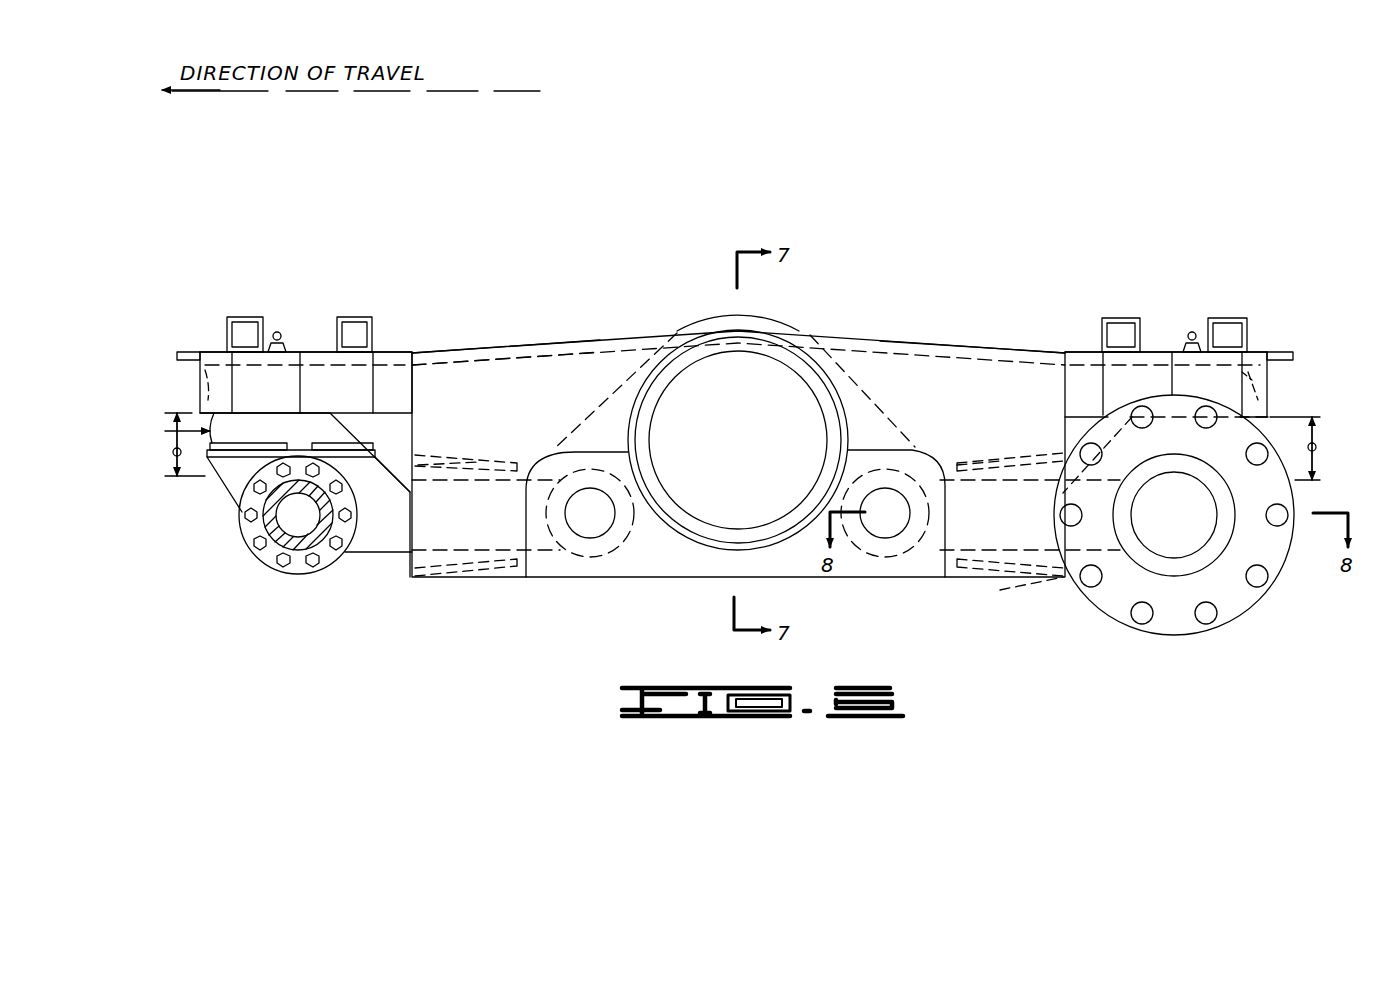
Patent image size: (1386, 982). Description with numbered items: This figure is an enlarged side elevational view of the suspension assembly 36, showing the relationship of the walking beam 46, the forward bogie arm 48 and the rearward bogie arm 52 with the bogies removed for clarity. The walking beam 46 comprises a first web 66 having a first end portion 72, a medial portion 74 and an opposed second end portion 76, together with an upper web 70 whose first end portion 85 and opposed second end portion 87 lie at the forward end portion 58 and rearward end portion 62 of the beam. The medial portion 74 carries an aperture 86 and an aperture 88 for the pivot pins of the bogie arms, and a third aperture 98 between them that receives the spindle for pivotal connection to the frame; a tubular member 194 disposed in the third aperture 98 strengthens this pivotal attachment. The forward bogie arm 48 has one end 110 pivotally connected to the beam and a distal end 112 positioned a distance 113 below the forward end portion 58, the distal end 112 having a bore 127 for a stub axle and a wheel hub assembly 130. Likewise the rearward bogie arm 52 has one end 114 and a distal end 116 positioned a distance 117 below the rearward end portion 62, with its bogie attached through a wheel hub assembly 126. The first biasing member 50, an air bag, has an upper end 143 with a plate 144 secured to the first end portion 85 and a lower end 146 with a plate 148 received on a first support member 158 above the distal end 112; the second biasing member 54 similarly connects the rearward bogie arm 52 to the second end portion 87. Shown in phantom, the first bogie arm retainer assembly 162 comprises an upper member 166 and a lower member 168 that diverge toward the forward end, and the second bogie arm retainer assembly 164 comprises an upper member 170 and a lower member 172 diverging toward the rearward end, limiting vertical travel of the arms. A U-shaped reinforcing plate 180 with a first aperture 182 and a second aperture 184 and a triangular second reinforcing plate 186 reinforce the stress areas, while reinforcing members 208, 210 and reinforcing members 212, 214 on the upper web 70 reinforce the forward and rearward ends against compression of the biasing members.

The suspension assembly 36 is at (912, 298).
The walking beam 46 is at (519, 343).
The forward bogie arm 48 is at (373, 560).
The first biasing member 50 is at (170, 431).
The rearward bogie arm 52 is at (935, 560).
The second biasing member 54 is at (1266, 380).
The forward end portion 58 is at (217, 345).
The rearward end portion 62 is at (1168, 345).
The first web 66 is at (937, 346).
The upper web 70 is at (613, 333).
The first end portion 72 is at (205, 382).
The medial portion 74 is at (901, 391).
The second end portion 76 is at (1270, 407).
The first end portion 85 is at (182, 352).
The aperture 86 is at (585, 537).
The second end portion 87 is at (1285, 352).
The aperture 88 is at (890, 537).
The third aperture 98 is at (716, 510).
The one end 110 is at (632, 540).
The distal end 112 is at (297, 548).
The distance 113 is at (173, 452).
The one end 114 is at (862, 545).
The distal end 116 is at (1125, 553).
The distance 117 is at (1316, 447).
The wheel hub assembly 126 is at (1248, 616).
The bore 127 is at (287, 520).
The wheel hub assembly 130 is at (238, 528).
The upper end 143 is at (405, 337).
The plate 144 is at (293, 340).
The lower end 146 is at (355, 450).
The plate 148 is at (300, 446).
The first support member 158 is at (228, 470).
The first bogie arm retainer assembly 162 is at (497, 455).
The second bogie arm retainer assembly 164 is at (962, 460).
The upper member 166 is at (480, 455).
The lower member 168 is at (450, 580).
The upper member 170 is at (993, 465).
The lower member 172 is at (1005, 590).
The reinforcing plate 180 is at (650, 560).
The first aperture 182 is at (567, 513).
The second aperture 184 is at (905, 513).
The second reinforcing plate 186 is at (740, 322).
The tubular member 194 is at (793, 357).
The reinforcing member 208 is at (245, 316).
The reinforcing member 210 is at (360, 352).
The reinforcing member 212 is at (1235, 318).
The reinforcing member 214 is at (1122, 318).